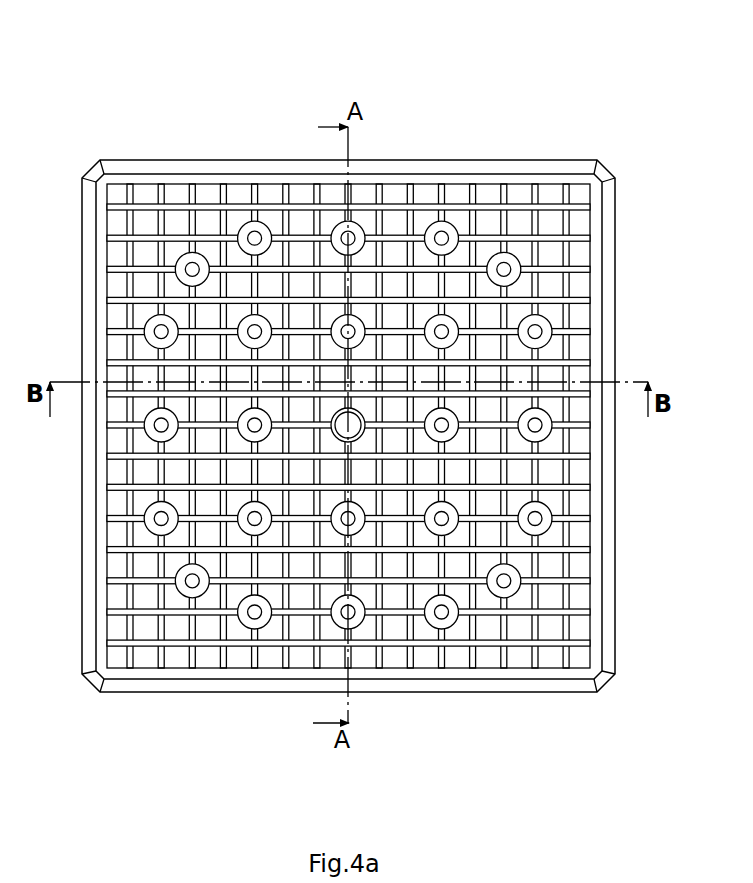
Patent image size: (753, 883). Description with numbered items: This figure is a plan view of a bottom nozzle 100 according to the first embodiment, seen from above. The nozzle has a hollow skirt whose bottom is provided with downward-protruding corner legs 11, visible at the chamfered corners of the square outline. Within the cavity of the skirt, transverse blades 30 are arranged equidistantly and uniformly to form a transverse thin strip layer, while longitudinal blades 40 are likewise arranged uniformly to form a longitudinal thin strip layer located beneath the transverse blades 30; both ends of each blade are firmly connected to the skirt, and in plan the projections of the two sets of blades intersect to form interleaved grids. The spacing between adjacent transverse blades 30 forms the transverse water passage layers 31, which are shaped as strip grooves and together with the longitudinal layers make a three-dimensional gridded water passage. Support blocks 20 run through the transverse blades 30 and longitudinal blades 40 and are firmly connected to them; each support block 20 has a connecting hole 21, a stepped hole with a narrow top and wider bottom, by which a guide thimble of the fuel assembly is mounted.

The bottom nozzle 100 is at (363, 350).
The corner legs 11 is at (160, 168).
The transverse blades 30 is at (192, 188).
The transverse water passage layers 31 is at (240, 192).
The longitudinal blades 40 is at (573, 209).
The support blocks 20 is at (356, 227).
The connecting hole 21 is at (505, 270).